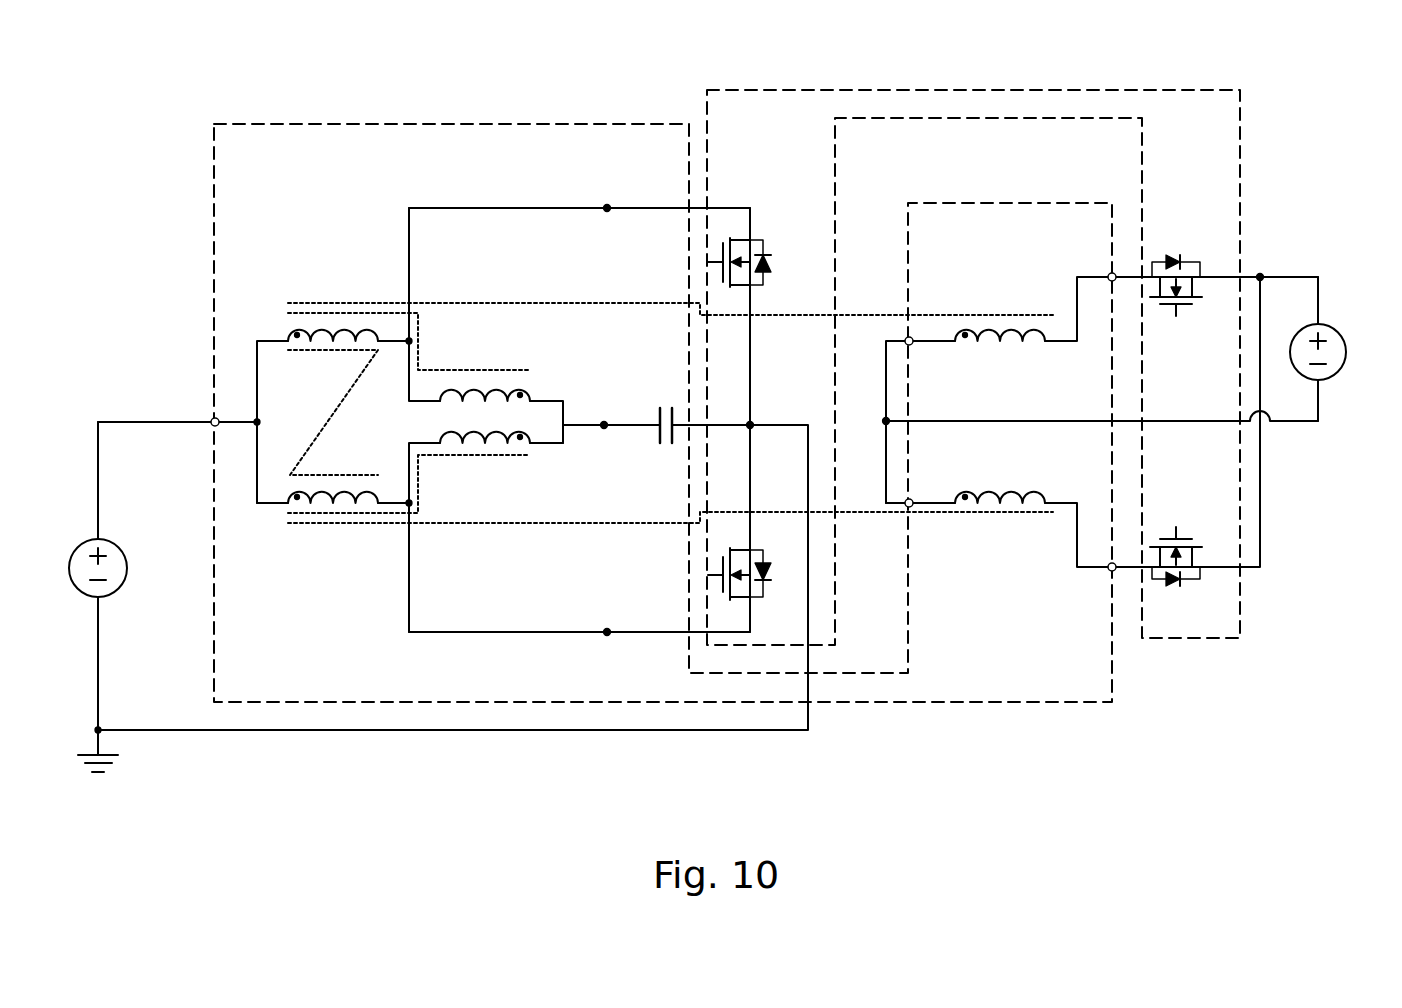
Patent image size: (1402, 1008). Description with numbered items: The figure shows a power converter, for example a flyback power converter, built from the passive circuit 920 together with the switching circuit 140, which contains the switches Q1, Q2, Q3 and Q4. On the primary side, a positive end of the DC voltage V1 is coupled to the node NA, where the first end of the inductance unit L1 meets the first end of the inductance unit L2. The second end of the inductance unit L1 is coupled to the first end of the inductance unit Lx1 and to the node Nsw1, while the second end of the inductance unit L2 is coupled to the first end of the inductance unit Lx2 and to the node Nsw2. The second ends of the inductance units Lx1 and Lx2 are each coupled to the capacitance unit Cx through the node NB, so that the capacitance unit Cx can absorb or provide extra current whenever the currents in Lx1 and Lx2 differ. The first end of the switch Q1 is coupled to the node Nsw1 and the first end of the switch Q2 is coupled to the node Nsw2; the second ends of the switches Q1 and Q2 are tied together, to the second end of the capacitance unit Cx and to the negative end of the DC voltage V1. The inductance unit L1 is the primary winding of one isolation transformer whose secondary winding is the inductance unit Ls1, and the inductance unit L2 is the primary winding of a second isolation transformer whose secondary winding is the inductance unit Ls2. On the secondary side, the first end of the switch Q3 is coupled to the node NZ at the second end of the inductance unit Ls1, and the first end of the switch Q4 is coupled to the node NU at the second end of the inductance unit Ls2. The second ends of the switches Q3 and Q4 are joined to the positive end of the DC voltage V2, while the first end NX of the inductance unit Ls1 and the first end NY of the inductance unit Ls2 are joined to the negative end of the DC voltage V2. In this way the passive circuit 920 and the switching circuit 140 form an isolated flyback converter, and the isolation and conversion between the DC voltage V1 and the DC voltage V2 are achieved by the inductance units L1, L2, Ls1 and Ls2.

The passive circuit 920 is at (214, 208).
The switching circuit 140 is at (968, 90).
The DC voltage V1 is at (72, 597).
The DC voltage V2 is at (1338, 349).
The node NA is at (212, 420).
The node NB is at (606, 428).
The first end of inductance unit Ls1 NX is at (908, 338).
The first end of inductance unit Ls2 NY is at (908, 507).
The node NZ is at (1111, 274).
The node NU is at (1111, 571).
The inductance unit L1 is at (283, 342).
The inductance unit L2 is at (283, 502).
The inductance unit Lx1 is at (532, 394).
The inductance unit Lx2 is at (535, 448).
The node Nsw1 is at (607, 208).
The node Nsw2 is at (607, 632).
The capacitance unit Cx is at (656, 444).
The switch Q1 is at (759, 316).
The switch Q2 is at (756, 528).
The switch Q3 is at (1190, 302).
The switch Q4 is at (1190, 572).
The inductance unit Ls1 is at (1067, 337).
The inductance unit Ls2 is at (1072, 508).